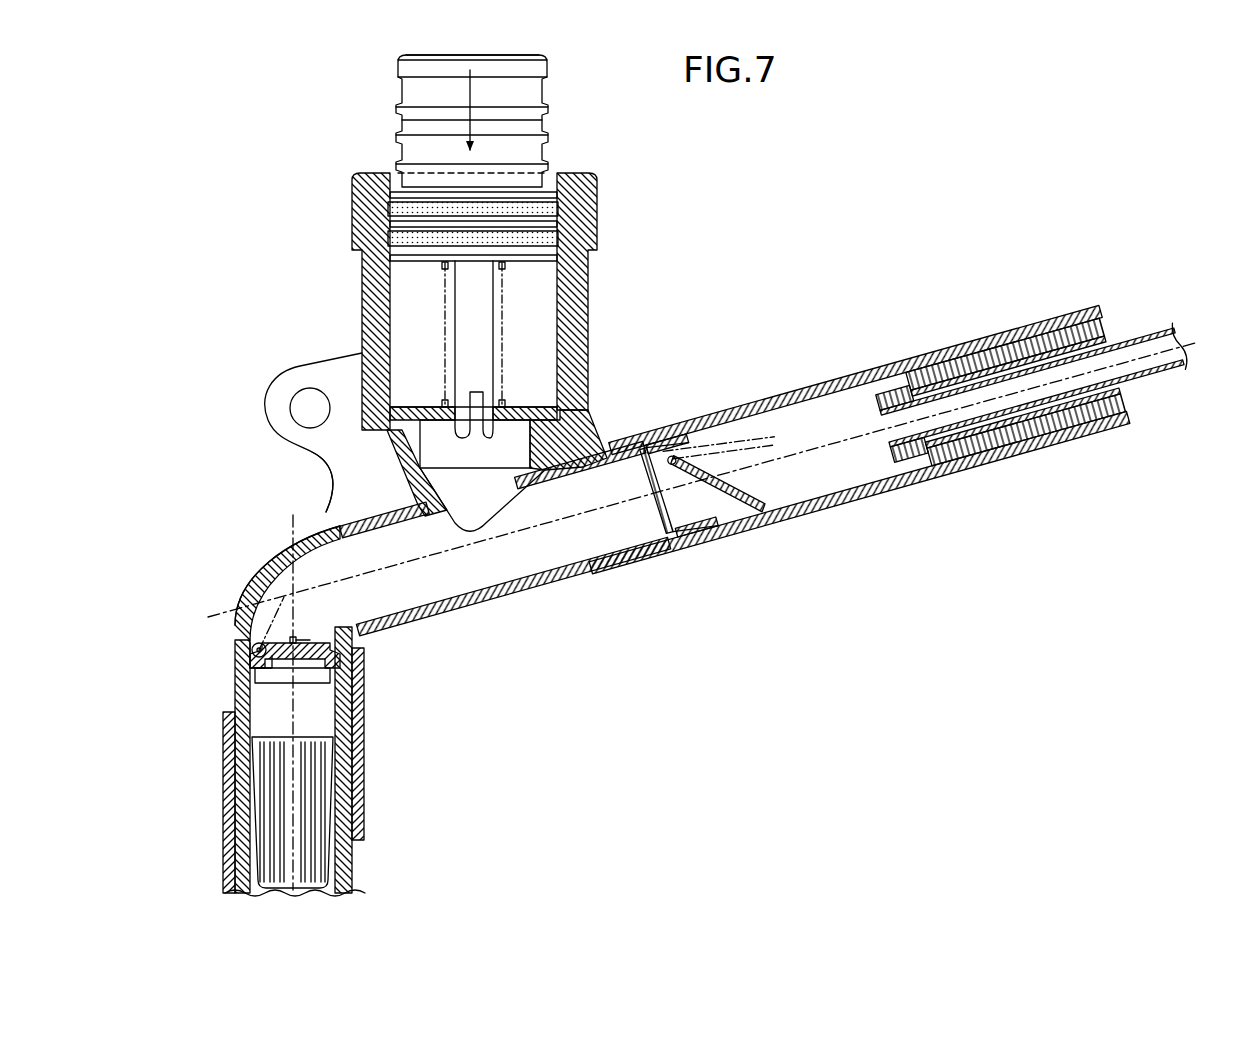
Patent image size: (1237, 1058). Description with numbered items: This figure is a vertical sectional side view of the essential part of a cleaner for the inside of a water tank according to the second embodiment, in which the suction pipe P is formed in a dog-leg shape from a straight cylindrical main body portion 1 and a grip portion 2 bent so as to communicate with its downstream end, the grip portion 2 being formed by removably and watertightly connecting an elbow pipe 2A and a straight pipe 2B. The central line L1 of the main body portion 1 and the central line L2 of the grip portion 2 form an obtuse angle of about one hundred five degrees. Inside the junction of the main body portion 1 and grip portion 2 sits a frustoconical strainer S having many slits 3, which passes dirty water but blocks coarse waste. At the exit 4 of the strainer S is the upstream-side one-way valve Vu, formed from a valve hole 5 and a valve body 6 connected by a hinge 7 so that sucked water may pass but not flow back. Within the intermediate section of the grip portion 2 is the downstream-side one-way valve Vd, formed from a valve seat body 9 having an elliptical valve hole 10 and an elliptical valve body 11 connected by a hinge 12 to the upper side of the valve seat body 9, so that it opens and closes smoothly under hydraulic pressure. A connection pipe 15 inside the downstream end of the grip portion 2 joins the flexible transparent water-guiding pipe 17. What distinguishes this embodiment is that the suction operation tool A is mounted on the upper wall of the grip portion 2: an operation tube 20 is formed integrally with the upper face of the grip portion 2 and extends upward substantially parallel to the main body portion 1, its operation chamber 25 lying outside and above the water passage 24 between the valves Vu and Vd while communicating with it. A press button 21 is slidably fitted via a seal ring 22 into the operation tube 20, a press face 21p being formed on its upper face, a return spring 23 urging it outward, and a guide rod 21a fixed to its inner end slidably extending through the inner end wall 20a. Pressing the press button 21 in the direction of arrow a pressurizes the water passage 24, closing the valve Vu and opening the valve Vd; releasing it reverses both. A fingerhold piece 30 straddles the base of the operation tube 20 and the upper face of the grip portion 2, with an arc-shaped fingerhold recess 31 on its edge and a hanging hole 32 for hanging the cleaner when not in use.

The main body portion 1 is at (353, 870).
The grip portion 2 is at (697, 340).
The elbow pipe 2A is at (596, 447).
The straight pipe 2B is at (637, 438).
The slits 3 is at (284, 755).
The exit 4 is at (286, 680).
The valve hole 5 is at (306, 658).
The valve body 6 is at (264, 640).
The hinge 7 is at (196, 674).
The valve seat body 9 is at (672, 527).
The valve hole 10 is at (723, 500).
The valve body 11 is at (750, 489).
The hinge 12 is at (673, 456).
The connection pipe 15 is at (917, 458).
The water-guiding pipe 17 is at (1133, 378).
The operation tube 20 is at (378, 346).
The inner end wall 20a is at (500, 437).
The press button 21 is at (541, 126).
The guide rod 21a is at (468, 358).
The press face 21p is at (438, 60).
The seal ring 22 is at (387, 240).
The return spring 23 is at (445, 287).
The water passage 24 is at (496, 499).
The operation chamber 25 is at (521, 334).
The fingerhold piece 30 is at (293, 372).
The fingerhold recess 31 is at (327, 458).
The hanging hole 32 is at (298, 403).
The suction operation tool A is at (396, 148).
The arrow a is at (467, 120).
The suction pipe P is at (253, 552).
The strainer S is at (248, 844).
The central line of the main body portion L1 is at (200, 758).
The central line of the grip portion L2 is at (702, 479).
The upstream-side one-way valve Vu is at (299, 636).
The downstream-side one-way valve Vd is at (742, 485).